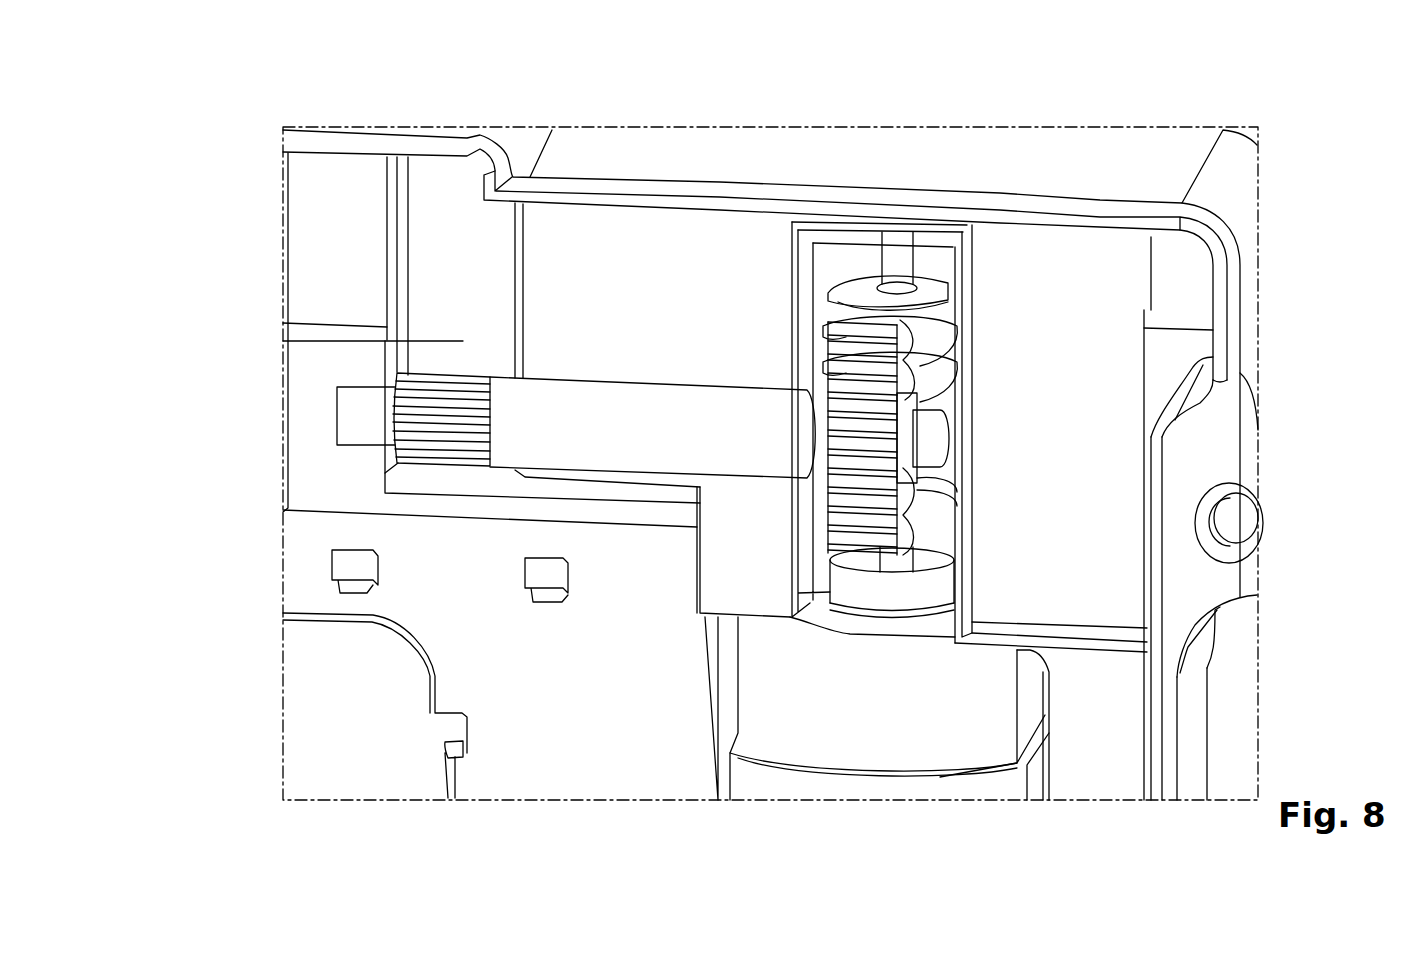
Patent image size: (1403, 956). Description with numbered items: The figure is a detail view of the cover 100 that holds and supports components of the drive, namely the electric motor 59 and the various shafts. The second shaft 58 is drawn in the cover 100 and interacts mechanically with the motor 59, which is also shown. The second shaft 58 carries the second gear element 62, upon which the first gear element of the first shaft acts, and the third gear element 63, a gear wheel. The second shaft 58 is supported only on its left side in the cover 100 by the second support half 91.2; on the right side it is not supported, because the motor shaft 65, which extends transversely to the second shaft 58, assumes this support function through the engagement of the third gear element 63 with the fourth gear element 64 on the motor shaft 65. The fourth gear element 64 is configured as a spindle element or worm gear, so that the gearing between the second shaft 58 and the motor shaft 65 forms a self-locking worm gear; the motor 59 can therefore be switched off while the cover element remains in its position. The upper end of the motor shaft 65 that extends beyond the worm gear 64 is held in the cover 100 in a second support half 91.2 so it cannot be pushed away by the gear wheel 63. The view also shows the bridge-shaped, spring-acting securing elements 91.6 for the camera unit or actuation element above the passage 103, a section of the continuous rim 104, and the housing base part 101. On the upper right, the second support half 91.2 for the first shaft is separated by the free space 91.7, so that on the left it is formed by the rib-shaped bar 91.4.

The second shaft 58 is at (653, 446).
The electric motor 59 is at (890, 740).
The second gear element 62 is at (462, 380).
The third gear element 63 is at (852, 360).
The fourth gear element 64 is at (853, 300).
The motor shaft 65 is at (899, 245).
The cover 100 is at (643, 217).
The housing base part 101 is at (607, 771).
The passage 103 is at (373, 753).
The continuous rim 104 is at (512, 175).
The second support half 91.2 is at (967, 273).
The rib-shaped bar 91.4 is at (978, 250).
The securing elements 91.6 is at (538, 573).
The free space 91.7 is at (1090, 283).